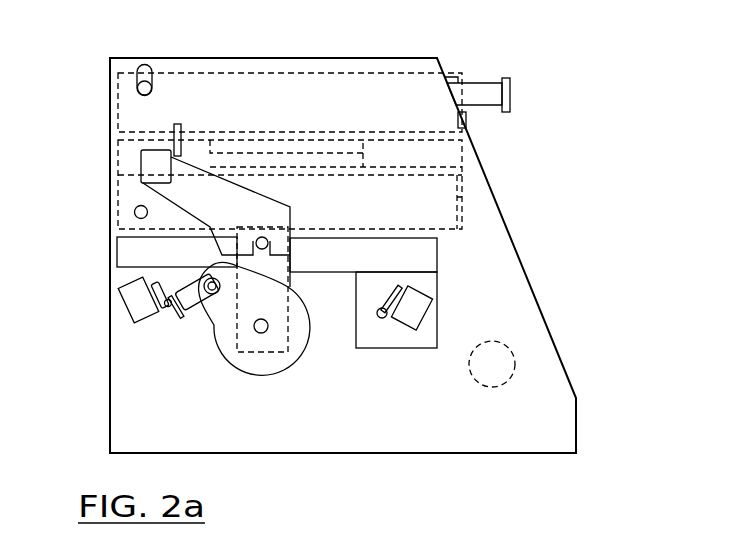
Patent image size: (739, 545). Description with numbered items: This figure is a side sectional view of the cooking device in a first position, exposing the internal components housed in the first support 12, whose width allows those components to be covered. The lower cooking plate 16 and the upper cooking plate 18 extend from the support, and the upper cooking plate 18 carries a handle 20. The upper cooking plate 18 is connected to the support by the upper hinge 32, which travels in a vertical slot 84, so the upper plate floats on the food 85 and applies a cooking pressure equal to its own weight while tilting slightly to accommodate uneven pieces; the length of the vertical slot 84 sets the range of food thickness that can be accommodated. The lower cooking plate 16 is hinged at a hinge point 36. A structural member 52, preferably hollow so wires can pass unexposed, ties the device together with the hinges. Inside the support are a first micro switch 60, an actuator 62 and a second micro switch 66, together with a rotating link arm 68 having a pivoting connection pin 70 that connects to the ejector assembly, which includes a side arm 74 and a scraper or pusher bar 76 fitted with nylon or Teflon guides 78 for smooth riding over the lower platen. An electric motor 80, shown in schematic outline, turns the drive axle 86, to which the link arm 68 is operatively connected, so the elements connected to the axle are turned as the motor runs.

The first support 12 is at (528, 455).
The lower cooking plate 16 is at (440, 212).
The upper cooking plate 18 is at (397, 86).
The handle 20 is at (512, 87).
The upper hinge 32 is at (137, 92).
The hinge point 36 is at (134, 212).
The structural member 52 is at (508, 358).
The first micro switch 60 is at (128, 291).
The actuator 62 is at (190, 297).
The second micro switch 66 is at (418, 308).
The rotating link arm 68 is at (291, 274).
The pivoting connection pin 70 is at (270, 243).
The side arm 74 is at (280, 211).
The pusher bar 76 is at (181, 126).
The guides 78 is at (141, 162).
The electric motor 80 is at (245, 363).
The vertical slot 84 is at (152, 78).
The food 85 is at (299, 143).
The drive axle 86 is at (262, 333).